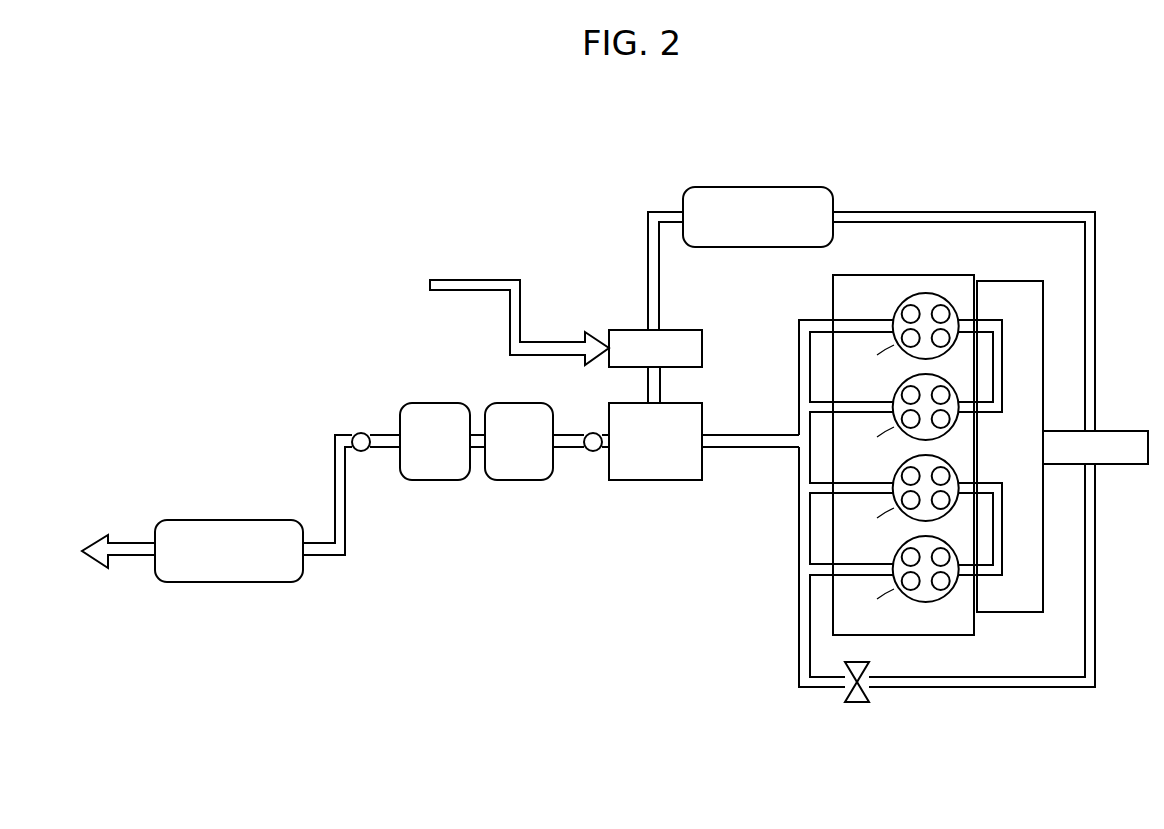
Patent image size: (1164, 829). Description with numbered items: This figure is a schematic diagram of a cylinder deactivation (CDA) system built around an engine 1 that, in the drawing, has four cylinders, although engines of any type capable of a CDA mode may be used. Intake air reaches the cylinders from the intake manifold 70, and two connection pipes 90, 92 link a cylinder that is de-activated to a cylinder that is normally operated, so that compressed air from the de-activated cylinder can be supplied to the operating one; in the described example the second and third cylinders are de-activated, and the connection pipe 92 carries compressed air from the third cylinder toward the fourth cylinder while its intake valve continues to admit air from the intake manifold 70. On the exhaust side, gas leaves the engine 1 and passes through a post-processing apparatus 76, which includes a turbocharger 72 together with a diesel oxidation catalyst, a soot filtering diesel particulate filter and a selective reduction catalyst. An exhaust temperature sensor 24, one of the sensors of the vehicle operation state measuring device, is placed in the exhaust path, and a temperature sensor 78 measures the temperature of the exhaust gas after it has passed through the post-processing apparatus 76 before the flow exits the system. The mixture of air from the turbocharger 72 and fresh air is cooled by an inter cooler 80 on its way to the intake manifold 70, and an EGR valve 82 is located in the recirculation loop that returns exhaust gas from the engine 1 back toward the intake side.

The engine 1 is at (942, 650).
The exhaust temperature sensor 24 is at (592, 452).
The intake manifold 70 is at (1045, 508).
The turbocharger 72 is at (672, 491).
The post-processing apparatus 76 is at (494, 498).
The temperature sensor 78 is at (356, 432).
The inter cooler 80 is at (727, 187).
The EGR valve 82 is at (856, 703).
The connection pipe 90 is at (994, 320).
The connection pipe 92 is at (1002, 577).